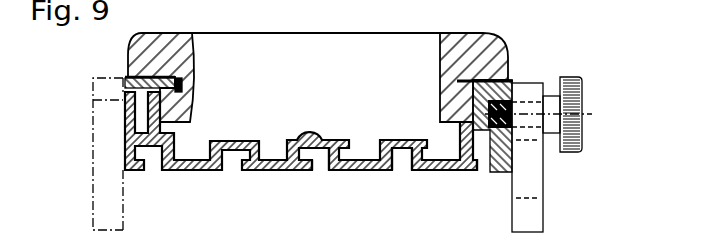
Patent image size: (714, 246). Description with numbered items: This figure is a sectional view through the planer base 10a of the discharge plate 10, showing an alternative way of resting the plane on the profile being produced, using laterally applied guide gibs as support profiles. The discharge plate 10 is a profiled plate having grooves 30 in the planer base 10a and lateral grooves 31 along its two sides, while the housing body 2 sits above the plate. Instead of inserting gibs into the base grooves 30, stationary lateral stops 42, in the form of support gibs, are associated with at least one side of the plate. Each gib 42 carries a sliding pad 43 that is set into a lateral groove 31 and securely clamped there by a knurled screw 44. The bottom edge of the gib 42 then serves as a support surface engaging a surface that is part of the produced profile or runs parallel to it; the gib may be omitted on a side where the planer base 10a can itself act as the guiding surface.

The housing body 2 is at (458, 38).
The discharge plate 10 is at (291, 163).
The planer base 10a is at (445, 172).
The grooves 30 is at (321, 158).
The lateral grooves 31 is at (517, 80).
The stationary lateral stops 42 is at (530, 187).
The sliding pads 43 is at (510, 93).
The knurled screw 44 is at (577, 105).